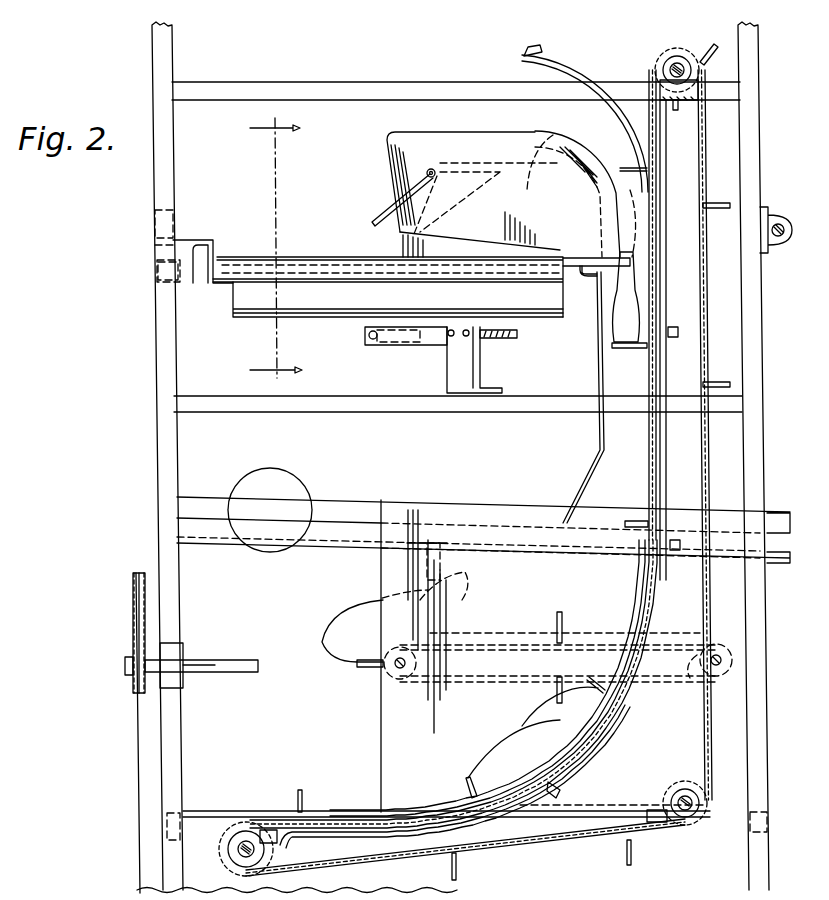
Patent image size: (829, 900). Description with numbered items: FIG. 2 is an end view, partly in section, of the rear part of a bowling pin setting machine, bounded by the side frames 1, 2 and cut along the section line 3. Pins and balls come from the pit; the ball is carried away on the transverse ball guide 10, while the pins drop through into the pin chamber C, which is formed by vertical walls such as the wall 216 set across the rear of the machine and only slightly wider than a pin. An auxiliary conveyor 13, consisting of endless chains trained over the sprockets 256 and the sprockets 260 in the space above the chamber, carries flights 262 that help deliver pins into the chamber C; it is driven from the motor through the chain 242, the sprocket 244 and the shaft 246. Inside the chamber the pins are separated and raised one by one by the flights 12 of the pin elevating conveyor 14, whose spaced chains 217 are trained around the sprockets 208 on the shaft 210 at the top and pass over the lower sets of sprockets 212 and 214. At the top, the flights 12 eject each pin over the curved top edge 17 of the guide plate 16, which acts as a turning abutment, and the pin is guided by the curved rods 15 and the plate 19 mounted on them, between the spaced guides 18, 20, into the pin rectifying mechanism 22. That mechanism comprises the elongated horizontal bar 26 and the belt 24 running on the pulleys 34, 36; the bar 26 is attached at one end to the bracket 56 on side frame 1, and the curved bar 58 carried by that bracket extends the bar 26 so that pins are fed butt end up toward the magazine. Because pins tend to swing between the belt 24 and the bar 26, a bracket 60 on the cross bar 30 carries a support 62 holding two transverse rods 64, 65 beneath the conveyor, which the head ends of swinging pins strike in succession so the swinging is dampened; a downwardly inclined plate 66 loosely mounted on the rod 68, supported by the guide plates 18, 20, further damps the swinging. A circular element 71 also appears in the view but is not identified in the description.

The side frame 1 is at (158, 183).
The side frame 2 is at (762, 128).
The section line 3- 3 is at (268, 248).
The transverse ball guide 10 is at (220, 545).
The flights 12 is at (703, 52).
The auxiliary conveyor chains 13 is at (472, 690).
The pin elevating conveyor 14 is at (703, 128).
The curved rods 15 is at (522, 62).
The guide plate 16 is at (597, 375).
The top edge of guide plate 17 is at (592, 278).
The guide plate 18 is at (503, 135).
The plate 19 is at (524, 50).
The guide plate 20 is at (550, 132).
The pin rectifying mechanism 22 is at (333, 250).
The belt 24 is at (590, 257).
The bar 26 is at (548, 280).
The cross bar 30 is at (335, 410).
The pulley 34 is at (600, 215).
The pulley 36 is at (247, 256).
The bracket 56 is at (208, 288).
The curved bar 58 is at (175, 270).
The bracket 60 is at (470, 367).
The support 62 is at (430, 347).
The rod 64 is at (518, 337).
The rod 65 is at (383, 347).
The plate 66 is at (380, 210).
The rod 68 is at (431, 168).
The roller 71 is at (205, 497).
The sprockets 208 is at (672, 48).
The shaft 210 is at (683, 62).
The sprockets 212 is at (683, 826).
The sprockets 214 is at (248, 840).
The vertical wall 216 is at (381, 572).
The chains 217 is at (600, 742).
The chain 242 is at (132, 580).
The sprocket 244 is at (125, 662).
The shaft 246 is at (240, 660).
The sprockets 256 is at (700, 682).
The sprockets 260 is at (405, 690).
The flights 262 is at (362, 668).
The pin chamber C is at (293, 755).